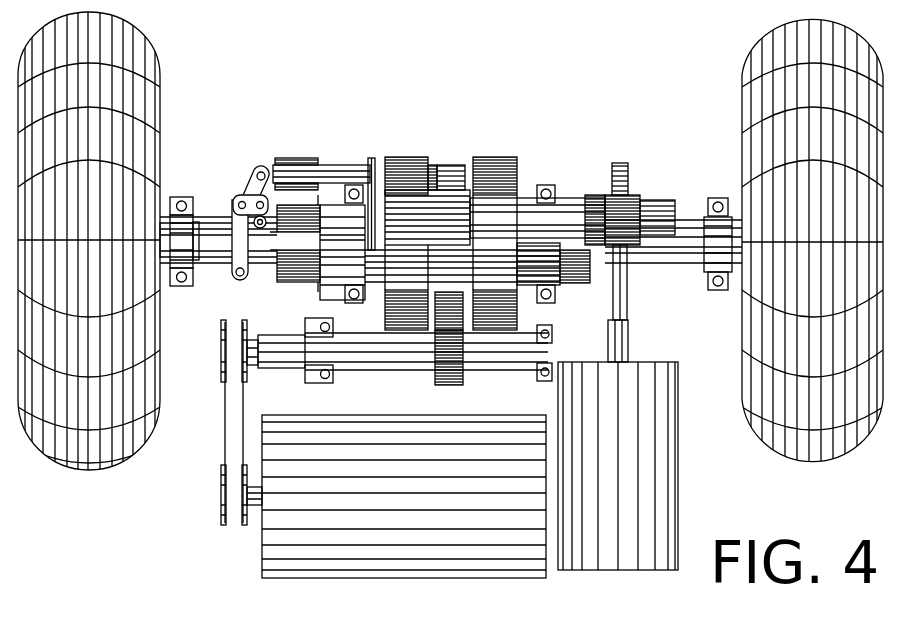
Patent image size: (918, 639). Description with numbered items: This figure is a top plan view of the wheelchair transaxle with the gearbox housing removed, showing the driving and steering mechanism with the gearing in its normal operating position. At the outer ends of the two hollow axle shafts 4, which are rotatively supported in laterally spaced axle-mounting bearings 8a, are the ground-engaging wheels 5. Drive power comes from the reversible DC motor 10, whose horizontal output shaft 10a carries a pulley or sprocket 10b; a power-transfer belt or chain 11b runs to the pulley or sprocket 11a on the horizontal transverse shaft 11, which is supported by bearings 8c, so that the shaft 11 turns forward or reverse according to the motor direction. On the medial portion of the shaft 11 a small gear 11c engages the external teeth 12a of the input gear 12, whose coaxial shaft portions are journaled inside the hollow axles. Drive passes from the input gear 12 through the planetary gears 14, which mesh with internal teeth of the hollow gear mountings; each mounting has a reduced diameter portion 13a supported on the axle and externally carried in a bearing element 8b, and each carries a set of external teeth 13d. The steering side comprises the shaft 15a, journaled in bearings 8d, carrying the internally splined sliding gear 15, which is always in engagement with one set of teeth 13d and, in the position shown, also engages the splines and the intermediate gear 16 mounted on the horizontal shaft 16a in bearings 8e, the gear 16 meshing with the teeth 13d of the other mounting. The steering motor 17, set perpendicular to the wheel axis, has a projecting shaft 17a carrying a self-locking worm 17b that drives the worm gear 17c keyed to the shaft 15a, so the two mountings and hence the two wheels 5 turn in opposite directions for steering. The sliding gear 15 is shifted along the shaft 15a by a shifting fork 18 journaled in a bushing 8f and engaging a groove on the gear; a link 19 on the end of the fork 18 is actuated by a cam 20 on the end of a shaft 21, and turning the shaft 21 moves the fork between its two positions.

The hollow axle shaft 4 is at (211, 266).
The ground-engaging wheel 5 is at (93, 473).
The axle-mounting bearing 8a is at (181, 196).
The bearing element 8b is at (343, 298).
The bearing 8c is at (324, 385).
The bearing 8d is at (661, 201).
The bearing 8e is at (293, 284).
The bushing 8f is at (301, 157).
The drive motor 10 is at (260, 571).
The output shaft 10a is at (255, 510).
The pulley or sprocket 10b is at (219, 500).
The horizontal transverse shaft 11 is at (376, 372).
The pulley or sprocket 11a is at (219, 358).
The power-transfer belt or chain 11b is at (222, 422).
The small gear 11c is at (466, 377).
The input gear 12 is at (452, 164).
The external teeth 12a is at (433, 324).
The reduced diameter portion 13a is at (580, 290).
The external teeth 13d is at (406, 156).
The planetary gear 14 is at (431, 164).
The sliding gear 15 is at (391, 160).
The shaft 15a is at (573, 197).
The intermediate gear 16 is at (518, 300).
The horizontal shaft 16a is at (386, 299).
The steering motor 17 is at (680, 413).
The projecting shaft 17a is at (636, 334).
The self-locking worm 17b is at (641, 196).
The worm gear 17c is at (626, 162).
The shifting fork 18 is at (333, 165).
The link 19 is at (232, 208).
The cam 20 is at (238, 193).
The shaft 21 is at (250, 193).